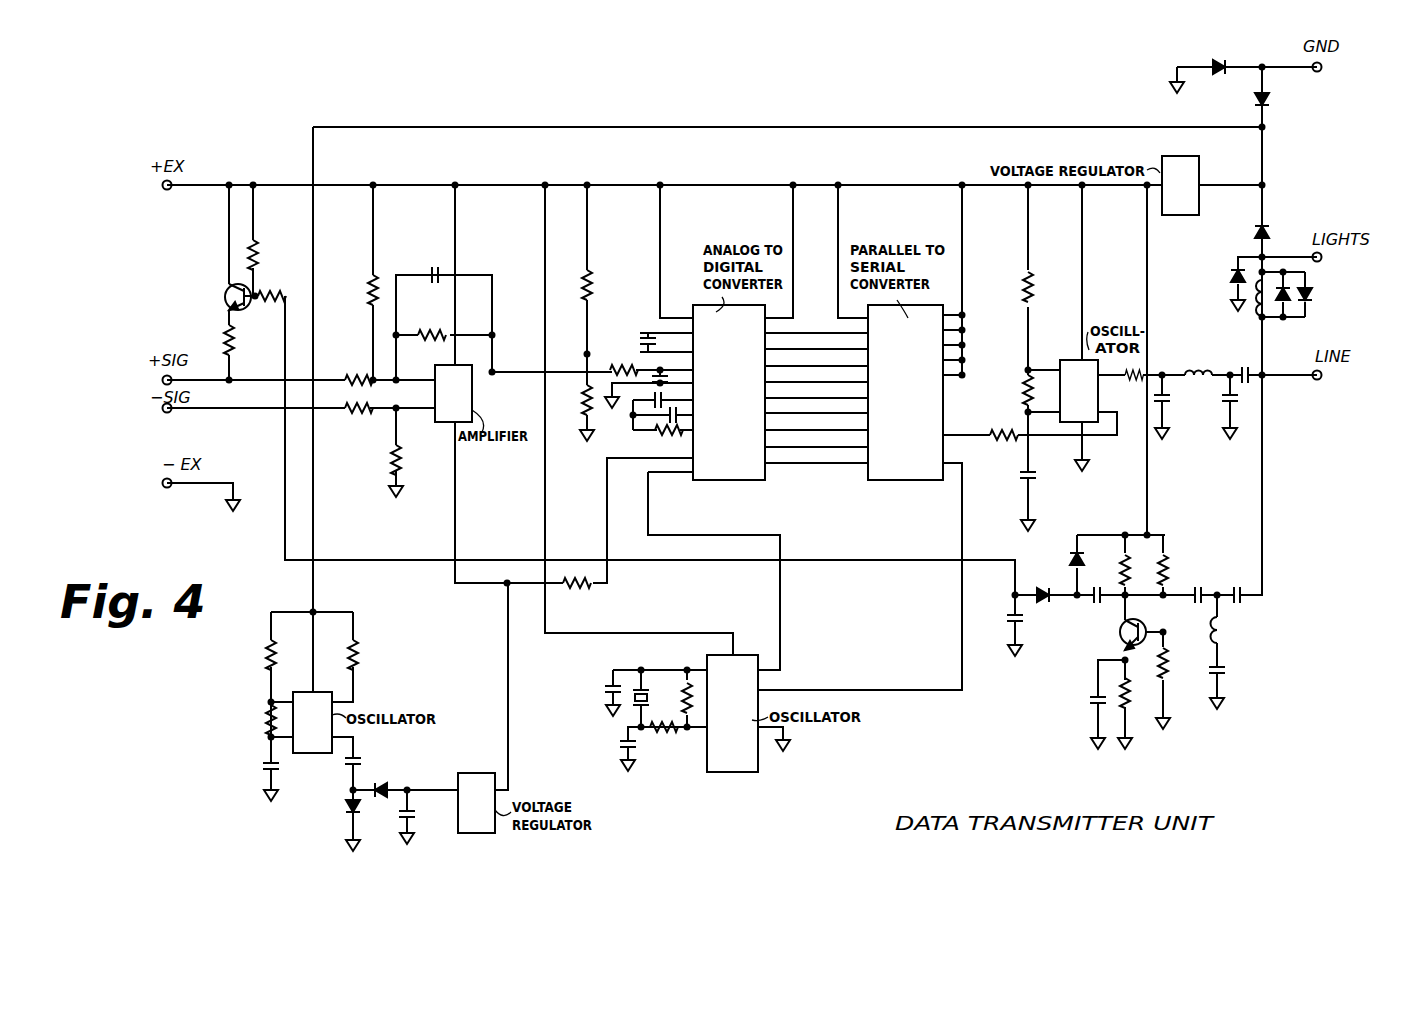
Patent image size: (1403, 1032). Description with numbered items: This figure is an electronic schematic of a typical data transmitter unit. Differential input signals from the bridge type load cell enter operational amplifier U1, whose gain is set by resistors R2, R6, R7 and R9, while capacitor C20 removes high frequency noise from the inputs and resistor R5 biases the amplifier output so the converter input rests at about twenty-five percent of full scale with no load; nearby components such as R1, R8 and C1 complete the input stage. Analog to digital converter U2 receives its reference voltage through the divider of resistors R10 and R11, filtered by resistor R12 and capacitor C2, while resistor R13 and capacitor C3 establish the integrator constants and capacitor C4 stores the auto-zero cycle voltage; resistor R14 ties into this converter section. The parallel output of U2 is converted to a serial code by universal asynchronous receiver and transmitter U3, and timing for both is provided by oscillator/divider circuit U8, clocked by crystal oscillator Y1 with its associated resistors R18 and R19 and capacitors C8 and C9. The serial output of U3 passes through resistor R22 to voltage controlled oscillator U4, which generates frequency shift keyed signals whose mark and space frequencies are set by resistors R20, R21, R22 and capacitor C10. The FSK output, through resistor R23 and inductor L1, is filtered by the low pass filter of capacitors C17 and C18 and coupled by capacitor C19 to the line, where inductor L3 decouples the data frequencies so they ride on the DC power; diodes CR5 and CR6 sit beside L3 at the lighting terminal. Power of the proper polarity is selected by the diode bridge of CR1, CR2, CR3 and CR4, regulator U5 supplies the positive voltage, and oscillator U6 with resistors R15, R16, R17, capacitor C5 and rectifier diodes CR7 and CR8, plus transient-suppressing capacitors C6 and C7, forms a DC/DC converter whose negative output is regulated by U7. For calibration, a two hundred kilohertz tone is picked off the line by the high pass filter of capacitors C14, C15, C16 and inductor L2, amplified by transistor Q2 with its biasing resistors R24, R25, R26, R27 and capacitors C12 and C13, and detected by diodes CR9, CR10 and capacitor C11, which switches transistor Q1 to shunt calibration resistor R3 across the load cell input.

The transistor Q1 is at (222, 297).
The amplifier Q2 is at (1141, 634).
The resistor R1 is at (265, 255).
The resistor R2 is at (272, 288).
The calibration resistor R3 is at (241, 340).
The resistor R5 is at (370, 290).
The resistor R6 is at (359, 371).
The resistor R7 is at (359, 417).
The resistor R8 is at (432, 326).
The resistor R9 is at (408, 460).
The resistor R10 is at (605, 285).
The resistor R11 is at (572, 400).
The resistor R12 is at (612, 365).
The resistor R13 is at (670, 439).
The resistor R14 is at (579, 592).
The resistor R15 is at (254, 655).
The resistor R16 is at (254, 720).
The resistor R17 is at (371, 655).
The resistor R18 is at (695, 678).
The resistor R19 is at (667, 739).
The resistor R20 is at (1009, 287).
The resistor R21 is at (1011, 390).
The resistor R22 is at (1003, 425).
The resistor R23 is at (1134, 375).
The resistor R24 is at (1142, 570).
The resistor R25 is at (1181, 569).
The resistor R26 is at (1143, 693).
The resistor R27 is at (1181, 661).
The capacitor C1 is at (631, 335).
The capacitor C2 is at (662, 368).
The capacitor C3 is at (638, 398).
The capacitor C4 is at (660, 420).
The capacitor C5 is at (254, 773).
The capacitor C6 is at (366, 754).
The capacitor C7 is at (419, 818).
The capacitor C8 is at (603, 686).
The capacitor C9 is at (613, 746).
The capacitor C10 is at (1012, 474).
The capacitor C11 is at (1033, 622).
The capacitor C12 is at (1101, 586).
The capacitor C13 is at (1080, 699).
The capacitor C14 is at (1196, 586).
The capacitor C15 is at (1238, 585).
The capacitor C16 is at (1235, 670).
The capacitor C17 is at (1180, 397).
The capacitor C18 is at (1219, 409).
The coupling capacitor C19 is at (1246, 363).
The capacitor C20 is at (432, 266).
The diode CR1 is at (1219, 55).
The diode CR2 is at (1281, 103).
The diode CR3 is at (1281, 223).
The diode CR4 is at (1214, 276).
The diode CR5 is at (1287, 306).
The diode CR6 is at (1324, 296).
The diode CR7 is at (331, 814).
The diode CR8 is at (390, 781).
The diode CR9 is at (1038, 584).
The diode CR10 is at (1059, 551).
The inductor L1 is at (1198, 359).
The inductor L2 is at (1230, 630).
The inductor L3 is at (1255, 300).
The oscillator Y1 is at (652, 696).
The operational amplifier U1 is at (453, 393).
The analog to digital converter U2 is at (729, 392).
The universal asynchronous receiver and transmitter circuit U3 is at (905, 392).
The voltage controlled oscillator U4 is at (1079, 391).
The regulator circuit U5 is at (1180, 185).
The oscillator U6 is at (312, 722).
The regulator U7 is at (476, 803).
The oscillator/divider circuit U8 is at (732, 713).